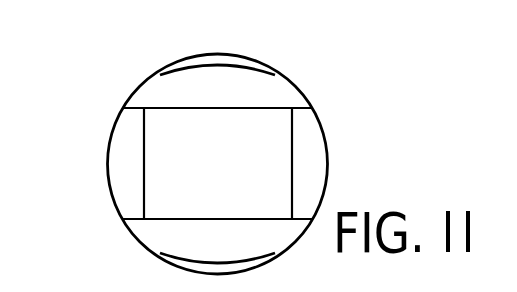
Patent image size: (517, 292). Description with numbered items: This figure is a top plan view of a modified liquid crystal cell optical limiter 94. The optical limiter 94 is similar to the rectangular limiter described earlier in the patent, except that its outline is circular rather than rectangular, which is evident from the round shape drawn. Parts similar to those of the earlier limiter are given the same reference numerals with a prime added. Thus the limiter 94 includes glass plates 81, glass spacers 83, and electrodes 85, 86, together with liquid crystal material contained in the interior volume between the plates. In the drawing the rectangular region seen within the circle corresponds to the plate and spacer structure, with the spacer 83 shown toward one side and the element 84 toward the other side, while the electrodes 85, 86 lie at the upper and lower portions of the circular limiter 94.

The modified liquid crystal cell optical limiter 94 is at (440, 68).
The glass plate 81 is at (312, 108).
The glass spacer 83 is at (118, 161).
The right bearing 84 is at (313, 156).
The electrode 85 is at (242, 70).
The electrode 86 is at (187, 240).